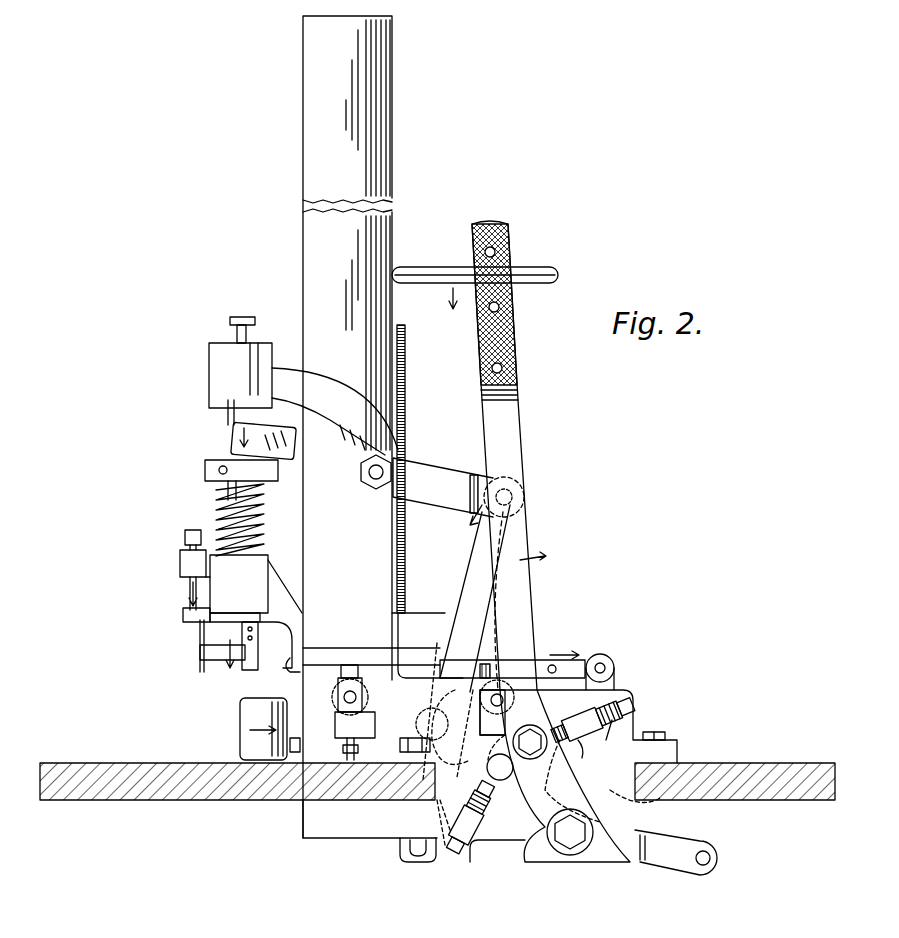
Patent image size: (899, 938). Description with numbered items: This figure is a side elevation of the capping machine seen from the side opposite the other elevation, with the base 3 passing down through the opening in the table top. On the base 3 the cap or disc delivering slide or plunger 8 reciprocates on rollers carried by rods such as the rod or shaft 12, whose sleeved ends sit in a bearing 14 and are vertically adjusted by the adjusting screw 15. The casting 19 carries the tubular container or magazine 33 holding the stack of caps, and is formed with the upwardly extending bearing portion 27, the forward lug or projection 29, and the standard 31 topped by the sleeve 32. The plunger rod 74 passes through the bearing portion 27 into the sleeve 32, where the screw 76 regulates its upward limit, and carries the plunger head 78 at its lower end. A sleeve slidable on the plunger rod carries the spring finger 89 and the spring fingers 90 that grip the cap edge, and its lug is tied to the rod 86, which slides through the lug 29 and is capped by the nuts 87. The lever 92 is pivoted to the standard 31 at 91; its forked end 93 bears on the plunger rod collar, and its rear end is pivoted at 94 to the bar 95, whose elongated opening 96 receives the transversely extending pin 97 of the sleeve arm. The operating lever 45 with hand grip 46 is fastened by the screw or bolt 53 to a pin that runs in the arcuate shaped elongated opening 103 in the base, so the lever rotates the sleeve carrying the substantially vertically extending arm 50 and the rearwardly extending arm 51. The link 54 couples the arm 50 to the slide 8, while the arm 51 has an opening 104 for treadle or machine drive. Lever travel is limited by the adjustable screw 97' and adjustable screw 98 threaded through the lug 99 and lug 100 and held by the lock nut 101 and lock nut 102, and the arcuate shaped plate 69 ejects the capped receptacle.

The base 3 is at (573, 775).
The cap or disc delivering slide or plunger 8 is at (488, 668).
The rod or shaft 12 is at (358, 697).
The bearing 14 is at (364, 720).
The adjusting screw 15 is at (358, 748).
The casting 19 is at (300, 623).
The upwardly extending bearing portion 27 is at (220, 572).
The lug or projection 29 is at (180, 564).
The standard 31 is at (383, 427).
The sleeve 32 is at (208, 376).
The container or magazine 33 is at (402, 300).
The lever 45 is at (524, 602).
The hand grip 46 is at (520, 350).
The substantially vertically extending arm 50 is at (616, 670).
The rearwardly extending substantially horizontal arm 51 is at (678, 866).
The screw or bolt 53 is at (566, 856).
The link 54 is at (592, 658).
The arcuate shaped plate 69 is at (250, 722).
The plunger rod 74 is at (290, 424).
The screw 76 is at (245, 317).
The plunger head 78 is at (222, 662).
The rod 86 is at (190, 588).
The nuts 87 is at (186, 539).
The spring finger 89 is at (200, 658).
The spring fingers 90 is at (256, 668).
The pivot 91 is at (392, 462).
The lever 92 is at (447, 474).
The forked end 93 is at (232, 436).
The pivot 94 is at (520, 498).
The bar 95 is at (470, 598).
The elongated opening 96 is at (417, 864).
The transversely extending pin 97 is at (436, 711).
The adjustable screw 97' is at (464, 849).
The adjustable screw 98 is at (636, 706).
The interiorly threaded lug 99 is at (486, 838).
The interiorly threaded lug 100 is at (588, 759).
The lock nut 101 is at (400, 815).
The lock nut 102 is at (608, 735).
The arcuate shaped elongated opening 103 is at (512, 774).
The opening 104 is at (711, 859).